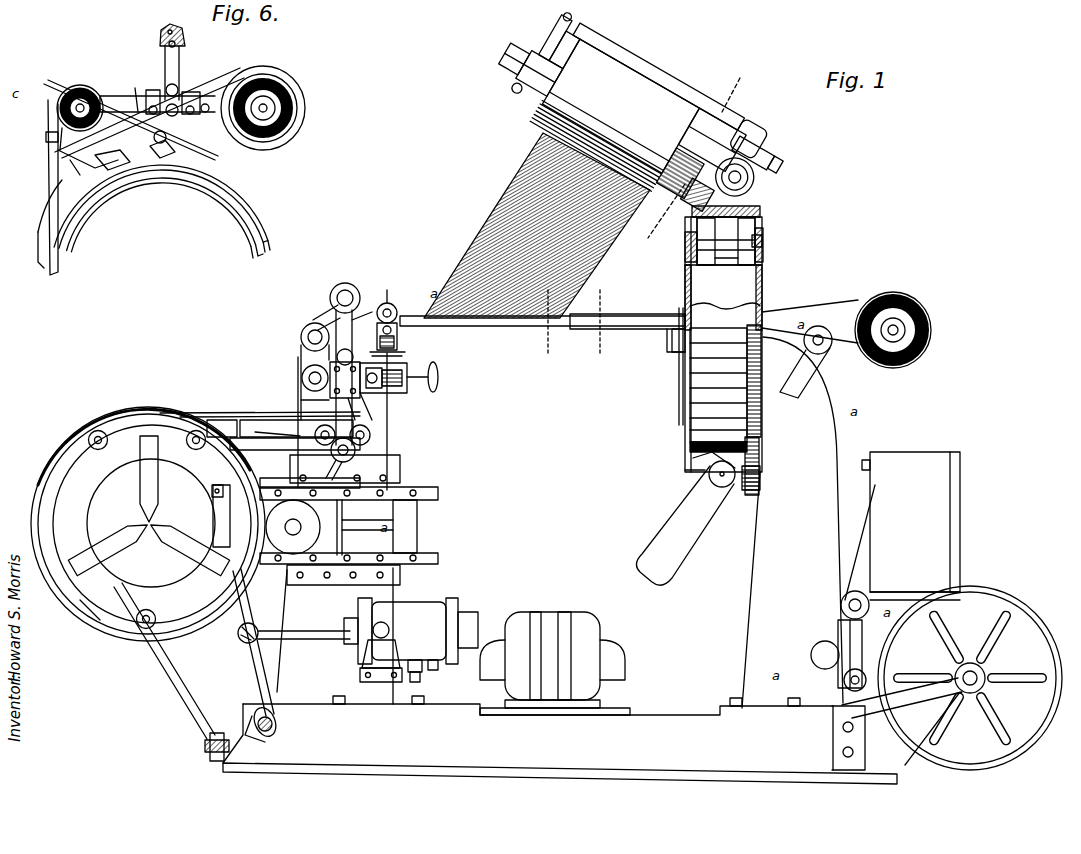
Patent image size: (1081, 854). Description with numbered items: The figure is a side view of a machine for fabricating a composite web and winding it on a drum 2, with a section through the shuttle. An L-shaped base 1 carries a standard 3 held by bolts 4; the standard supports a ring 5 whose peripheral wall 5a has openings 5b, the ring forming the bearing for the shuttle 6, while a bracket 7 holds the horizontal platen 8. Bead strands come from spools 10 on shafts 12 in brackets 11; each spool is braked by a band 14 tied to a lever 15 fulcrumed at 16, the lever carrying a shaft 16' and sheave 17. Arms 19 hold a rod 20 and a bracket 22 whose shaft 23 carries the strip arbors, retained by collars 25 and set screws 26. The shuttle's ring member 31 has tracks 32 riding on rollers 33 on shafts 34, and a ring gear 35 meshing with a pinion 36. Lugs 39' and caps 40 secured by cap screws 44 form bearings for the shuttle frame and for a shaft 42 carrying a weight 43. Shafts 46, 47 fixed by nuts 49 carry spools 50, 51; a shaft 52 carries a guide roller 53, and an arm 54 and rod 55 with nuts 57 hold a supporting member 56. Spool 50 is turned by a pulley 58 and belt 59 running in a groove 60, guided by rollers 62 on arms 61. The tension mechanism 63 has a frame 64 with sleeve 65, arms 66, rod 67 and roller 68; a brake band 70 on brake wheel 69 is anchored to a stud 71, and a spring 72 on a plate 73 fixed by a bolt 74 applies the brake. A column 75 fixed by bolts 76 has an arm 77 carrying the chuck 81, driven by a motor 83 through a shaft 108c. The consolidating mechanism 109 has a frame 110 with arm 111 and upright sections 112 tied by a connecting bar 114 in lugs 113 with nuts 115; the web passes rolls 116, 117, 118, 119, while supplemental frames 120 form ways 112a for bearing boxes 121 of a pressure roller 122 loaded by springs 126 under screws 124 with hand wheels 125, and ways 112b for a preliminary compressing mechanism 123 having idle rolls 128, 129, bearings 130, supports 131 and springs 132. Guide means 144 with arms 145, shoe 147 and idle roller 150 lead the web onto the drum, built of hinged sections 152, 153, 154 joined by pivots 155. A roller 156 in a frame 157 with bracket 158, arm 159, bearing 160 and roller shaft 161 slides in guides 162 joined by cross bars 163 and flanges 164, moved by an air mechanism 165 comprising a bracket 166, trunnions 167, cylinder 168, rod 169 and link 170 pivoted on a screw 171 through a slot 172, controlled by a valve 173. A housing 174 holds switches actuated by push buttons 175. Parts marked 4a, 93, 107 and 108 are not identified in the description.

In FIG. 1, the bed 1 is at (662, 688).
In FIG. 1, the hand wheel 2 is at (78, 482).
In FIG. 1, the stand 3 is at (760, 548).
In FIG. 1, the sheet 4 is at (608, 414).
In FIG. 1, the sheet section line 4a is at (551, 321).
In FIG. 6, the segment 5 is at (168, 178).
In FIG. 1, the segment 5 is at (690, 236).
In FIG. 1, the column 5a is at (726, 312).
In FIG. 1, the bearing block 5b is at (770, 238).
In FIG. 1, the section line 6 is at (701, 154).
In FIG. 1, the bracket 7 is at (660, 342).
In FIG. 1, the table 8 is at (565, 330).
In FIG. 1, the drive pulley 10 is at (978, 590).
In FIG. 1, the belt 11 is at (892, 744).
In FIG. 1, the hub 12 is at (984, 672).
In FIG. 1, the shelf 14 is at (912, 592).
In FIG. 1, the guide 15 is at (845, 650).
In FIG. 1, the roller 16 is at (838, 667).
In FIG. 1, the roller 16' is at (833, 602).
In FIG. 1, the roller bracket 17 is at (843, 596).
In FIG. 1, the arm 19 is at (800, 360).
In FIG. 1, the pivot 20 is at (820, 330).
In FIG. 1, the strap 22 is at (848, 312).
In FIG. 1, the pulley 23 is at (896, 300).
In FIG. 1, the pulley hub 25 is at (902, 355).
In FIG. 1, the pulley rim 26 is at (932, 330).
In FIG. 6, the gear 31 is at (268, 214).
In FIG. 1, the gear 31 is at (765, 214).
In FIG. 1, the cap 32 is at (760, 208).
In FIG. 1, the bearing 33 is at (732, 258).
In FIG. 1, the plate 34 is at (696, 248).
In FIG. 1, the rack 35 is at (768, 197).
In FIG. 1, the pinion 36 is at (748, 492).
In FIG. 1, the lug 39' is at (697, 459).
In FIG. 1, the ring 40 is at (754, 172).
In FIG. 1, the pivot pin 42 is at (718, 484).
In FIG. 1, the lever 43 is at (648, 552).
In FIG. 1, the bolt 44 is at (746, 166).
In FIG. 6, the strap 46 is at (75, 86).
In FIG. 6, the pulley 47 is at (300, 100).
In FIG. 1, the pulley 47 is at (517, 58).
In FIG. 1, the block 49 is at (740, 186).
In FIG. 6, the pulley rim 50 is at (58, 108).
In FIG. 6, the pulley hub 51 is at (296, 112).
In FIG. 1, the pulley hub 51 is at (556, 93).
In FIG. 6, the clamp 52 is at (178, 145).
In FIG. 6, the pin 53 is at (180, 90).
In FIG. 1, the plate 54 is at (748, 152).
In FIG. 6, the knob 55 is at (186, 44).
In FIG. 1, the nut 56 is at (552, 38).
In FIG. 1, the bolt 57 is at (562, 26).
In FIG. 6, the pulley 58 is at (64, 92).
In FIG. 6, the guide strip 59 is at (60, 160).
In FIG. 1, the guide strip 59 is at (682, 400).
In FIG. 6, the band 60 is at (62, 226).
In FIG. 1, the band 60 is at (690, 222).
In FIG. 6, the link 61 is at (128, 150).
In FIG. 6, the clamp 62 is at (46, 138).
In FIG. 1, the collar 63 is at (576, 27).
In FIG. 6, the plate 64 is at (161, 32).
In FIG. 1, the plate 64 is at (659, 74).
In FIG. 6, the roll 65 is at (174, 28).
In FIG. 1, the roll 65 is at (652, 66).
In FIG. 6, the stem 66 is at (165, 62).
In FIG. 1, the stem 66 is at (574, 58).
In FIG. 6, the block 67 is at (152, 90).
In FIG. 6, the block 68 is at (196, 90).
In FIG. 6, the bracket 69 is at (305, 88).
In FIG. 1, the bracket 69 is at (752, 130).
In FIG. 6, the bar 70 is at (236, 66).
In FIG. 1, the bar 70 is at (746, 122).
In FIG. 6, the pin 71 is at (209, 106).
In FIG. 6, the pin 72 is at (132, 88).
In FIG. 6, the strap 73 is at (130, 90).
In FIG. 6, the carrier 74 is at (105, 96).
In FIG. 1, the plate 75 is at (395, 590).
In FIG. 1, the foot 76 is at (334, 696).
In FIG. 1, the link 77 is at (232, 610).
In FIG. 1, the disc 81 is at (151, 523).
In FIG. 1, the motor 83 is at (545, 614).
In FIG. 1, the bar 93 is at (200, 694).
In FIG. 1, the slide 107 is at (204, 746).
In FIG. 1, the block 108 is at (440, 670).
In FIG. 1, the block 108c is at (414, 675).
In FIG. 1, the roller 109 is at (306, 336).
In FIG. 1, the pin 110 is at (359, 349).
In FIG. 1, the link 111 is at (332, 438).
In FIG. 1, the lever 112 is at (320, 316).
In FIG. 1, the lever arm 112a is at (370, 400).
In FIG. 1, the lever arm 112b is at (371, 309).
In FIG. 1, the lever 113 is at (356, 292).
In FIG. 1, the roller 114 is at (342, 286).
In FIG. 1, the pin 115 is at (360, 296).
In FIG. 1, the roller 116 is at (300, 324).
In FIG. 1, the bar 117 is at (304, 356).
In FIG. 1, the roller 118 is at (302, 374).
In FIG. 1, the bar 119 is at (304, 400).
In FIG. 1, the spring 120 is at (390, 390).
In FIG. 1, the arm 121 is at (362, 410).
In FIG. 1, the roller 122 is at (345, 427).
In FIG. 1, the plate 123 is at (397, 333).
In FIG. 1, the housing 124 is at (420, 364).
In FIG. 1, the hand wheel 125 is at (438, 377).
In FIG. 1, the pin 126 is at (378, 384).
In FIG. 1, the roller 128 is at (393, 304).
In FIG. 1, the pin 129 is at (392, 315).
In FIG. 1, the spring 130 is at (417, 338).
In FIG. 1, the plate 131 is at (417, 349).
In FIG. 1, the plate 132 is at (394, 346).
In FIG. 1, the band 144 is at (206, 412).
In FIG. 1, the bar 145 is at (295, 446).
In FIG. 1, the block 147 is at (218, 428).
In FIG. 1, the bar 150 is at (296, 426).
In FIG. 1, the ring 152 is at (66, 512).
In FIG. 1, the rim 153 is at (218, 462).
In FIG. 1, the spoke 154 is at (130, 438).
In FIG. 1, the lug 155 is at (92, 450).
In FIG. 1, the bar 156 is at (280, 486).
In FIG. 1, the plate 157 is at (392, 476).
In FIG. 1, the plate 158 is at (367, 521).
In FIG. 1, the plate 159 is at (367, 510).
In FIG. 1, the hub 160 is at (300, 530).
In FIG. 1, the pulley 161 is at (296, 524).
In FIG. 1, the bar 162 is at (418, 492).
In FIG. 1, the block 163 is at (418, 522).
In FIG. 1, the plate 164 is at (390, 470).
In FIG. 1, the collar 165 is at (352, 618).
In FIG. 1, the bracket 166 is at (368, 658).
In FIG. 1, the bearing 167 is at (382, 622).
In FIG. 1, the gear housing 168 is at (418, 620).
In FIG. 1, the shaft 169 is at (305, 630).
In FIG. 1, the joint 170 is at (244, 650).
In FIG. 1, the pivot 171 is at (272, 722).
In FIG. 1, the link 172 is at (252, 710).
In FIG. 1, the knob 173 is at (348, 458).
In FIG. 1, the box 174 is at (908, 460).
In FIG. 1, the roller 175 is at (309, 382).